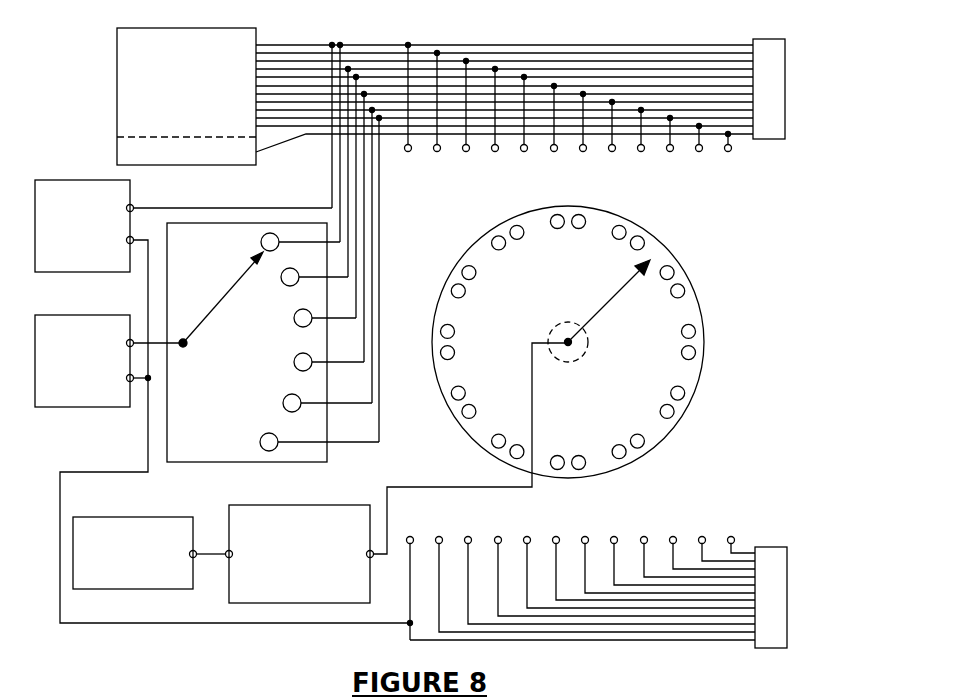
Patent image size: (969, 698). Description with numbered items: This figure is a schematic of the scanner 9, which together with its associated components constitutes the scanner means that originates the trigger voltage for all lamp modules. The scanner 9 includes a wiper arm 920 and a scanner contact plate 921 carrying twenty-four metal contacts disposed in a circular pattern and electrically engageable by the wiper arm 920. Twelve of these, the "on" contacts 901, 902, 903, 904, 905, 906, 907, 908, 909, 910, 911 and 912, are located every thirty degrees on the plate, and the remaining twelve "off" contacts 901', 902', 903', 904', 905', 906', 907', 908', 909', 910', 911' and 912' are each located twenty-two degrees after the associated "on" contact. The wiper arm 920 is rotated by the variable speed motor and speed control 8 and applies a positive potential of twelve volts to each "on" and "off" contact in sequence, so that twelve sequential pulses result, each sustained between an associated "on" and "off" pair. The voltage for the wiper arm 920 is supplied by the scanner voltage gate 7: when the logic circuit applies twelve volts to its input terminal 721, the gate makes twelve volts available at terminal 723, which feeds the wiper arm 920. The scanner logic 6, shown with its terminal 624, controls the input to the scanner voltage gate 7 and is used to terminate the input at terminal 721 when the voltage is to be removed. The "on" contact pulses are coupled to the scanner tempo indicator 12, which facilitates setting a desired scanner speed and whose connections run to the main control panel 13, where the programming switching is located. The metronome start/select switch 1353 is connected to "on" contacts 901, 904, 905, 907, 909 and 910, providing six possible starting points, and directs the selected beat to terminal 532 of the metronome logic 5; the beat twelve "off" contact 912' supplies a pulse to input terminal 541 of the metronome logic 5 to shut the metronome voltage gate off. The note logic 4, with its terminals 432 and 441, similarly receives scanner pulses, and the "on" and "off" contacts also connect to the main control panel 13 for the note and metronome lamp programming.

The scanner tempo indicator 12 is at (117, 107).
The main control panel 13 is at (785, 96).
The note logic 4 is at (35, 253).
The metronome logic 5 is at (35, 384).
The scanner logic 6 is at (123, 517).
The scanner voltage gate 7 is at (244, 505).
The motor and speed control 8 is at (558, 361).
The scanner 9 is at (713, 311).
The terminal 432 is at (134, 204).
The terminal 441 is at (132, 244).
The terminal of the "and" gate 532 is at (132, 340).
The input terminal of the special "and" gate 541 is at (130, 382).
The terminal 624 is at (202, 546).
The input terminal 721 is at (227, 560).
The terminal 723 is at (370, 552).
The metronome start/select switch 1353 is at (185, 347).
The scanner wiper arm 920 is at (602, 302).
The scanner contact plate 921 is at (638, 356).
The scanner "on" contact 901 is at (511, 136).
The scanner "on" contact 902 is at (558, 150).
The scanner "on" contact 903 is at (592, 180).
The scanner "on" contact 904 is at (610, 215).
The scanner "on" contact 905 is at (613, 252).
The scanner "on" contact 906 is at (601, 285).
The scanner "on" contact 907 is at (578, 297).
The scanner "on" contact 908 is at (533, 278).
The scanner "on" contact 909 is at (531, 261).
The scanner "on" contact 910 is at (544, 227).
The scanner "on" contact 911 is at (568, 202).
The scanner "on" contact 912 is at (626, 186).
The scanner "off" contact 901' is at (697, 379).
The scanner "off" contact 902' is at (707, 408).
The scanner "off" contact 903' is at (705, 444).
The scanner "off" contact 904' is at (690, 481).
The scanner "off" contact 905' is at (675, 509).
The scanner "off" contact 906' is at (661, 525).
The scanner "off" contact 907' is at (595, 522).
The scanner "off" contact 908' is at (576, 506).
The scanner "off" contact 909' is at (574, 479).
The scanner "off" contact 910' is at (577, 452).
The scanner "off" contact 911' is at (588, 427).
The beat twelve "off" contact 912' is at (573, 411).